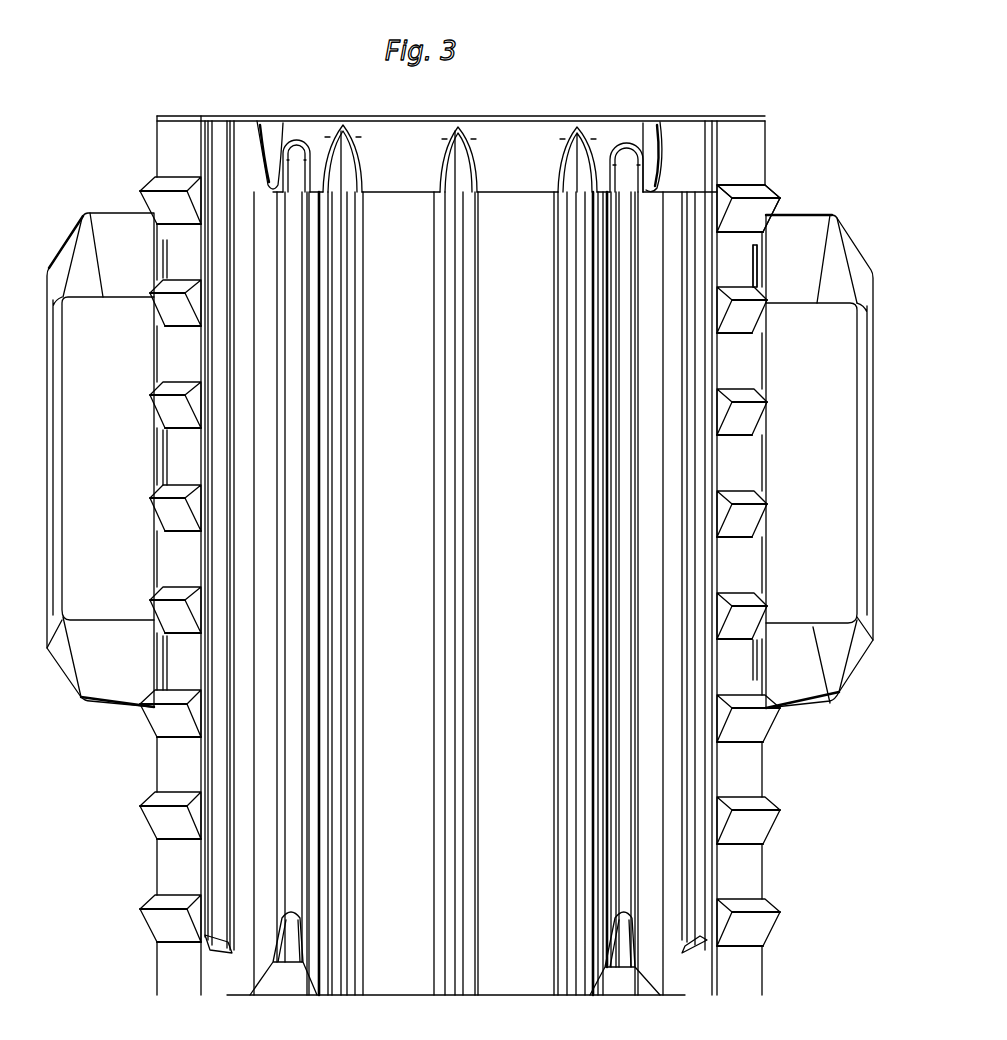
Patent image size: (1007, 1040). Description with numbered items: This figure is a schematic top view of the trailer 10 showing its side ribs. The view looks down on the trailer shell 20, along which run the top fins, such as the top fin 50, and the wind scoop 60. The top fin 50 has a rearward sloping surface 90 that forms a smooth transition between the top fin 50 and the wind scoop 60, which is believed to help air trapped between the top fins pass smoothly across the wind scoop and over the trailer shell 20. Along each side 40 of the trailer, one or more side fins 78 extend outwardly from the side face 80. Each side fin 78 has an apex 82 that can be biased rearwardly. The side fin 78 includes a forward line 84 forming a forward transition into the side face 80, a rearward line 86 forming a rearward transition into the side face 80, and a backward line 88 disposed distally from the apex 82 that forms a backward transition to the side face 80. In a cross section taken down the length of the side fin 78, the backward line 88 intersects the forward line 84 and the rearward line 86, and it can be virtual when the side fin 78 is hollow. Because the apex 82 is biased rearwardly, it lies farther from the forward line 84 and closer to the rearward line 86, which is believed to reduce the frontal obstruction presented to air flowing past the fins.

The trailer 10 is at (718, 90).
The trailer shell 20 is at (620, 116).
The side 40 is at (766, 153).
The top fin 50 is at (462, 210).
The wind scoop 60 is at (525, 140).
The side fin 78 is at (765, 190).
The side face 80 is at (750, 167).
The apex 82 is at (777, 199).
The forward line 84 is at (750, 227).
The rearward line 86 is at (720, 200).
The backward line 88 is at (748, 193).
The rearward sloping surface 90 is at (440, 150).